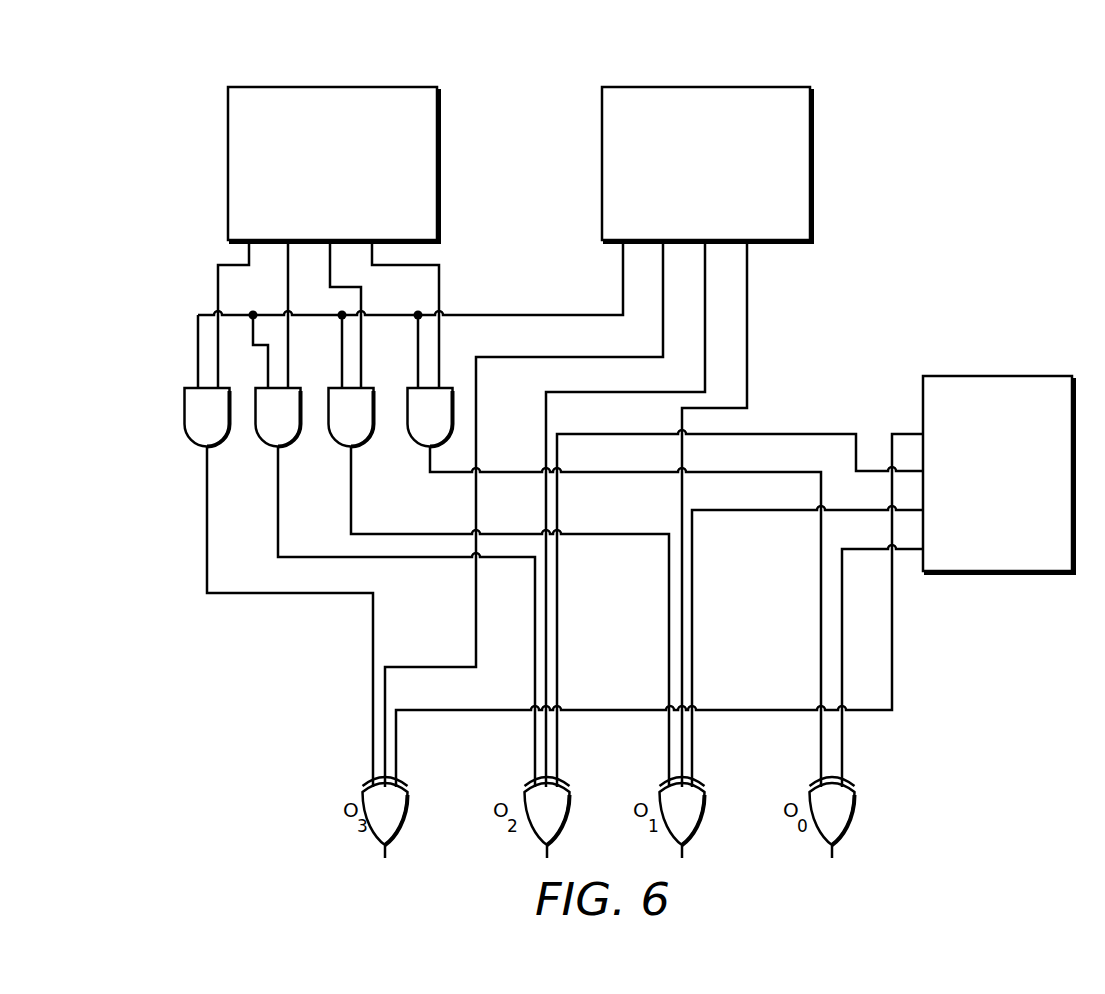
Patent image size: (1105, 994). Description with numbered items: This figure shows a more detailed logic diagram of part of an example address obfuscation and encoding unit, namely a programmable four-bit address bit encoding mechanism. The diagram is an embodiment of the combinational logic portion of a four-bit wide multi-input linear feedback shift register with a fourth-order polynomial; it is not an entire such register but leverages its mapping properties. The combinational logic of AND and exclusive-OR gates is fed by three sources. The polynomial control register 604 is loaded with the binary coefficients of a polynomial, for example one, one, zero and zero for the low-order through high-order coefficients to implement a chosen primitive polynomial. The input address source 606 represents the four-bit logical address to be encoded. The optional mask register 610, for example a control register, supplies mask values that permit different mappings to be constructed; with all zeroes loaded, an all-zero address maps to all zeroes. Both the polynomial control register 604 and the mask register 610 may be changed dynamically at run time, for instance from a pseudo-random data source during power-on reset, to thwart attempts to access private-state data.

The polynomial control register 604 is at (146, 208).
The input address source 606 is at (543, 207).
The optional mask register 610 is at (995, 657).